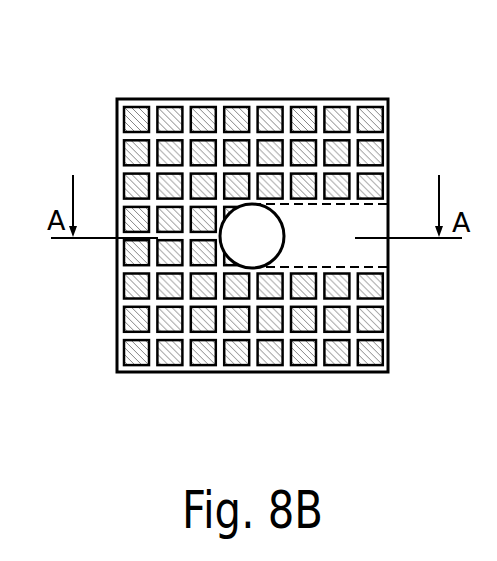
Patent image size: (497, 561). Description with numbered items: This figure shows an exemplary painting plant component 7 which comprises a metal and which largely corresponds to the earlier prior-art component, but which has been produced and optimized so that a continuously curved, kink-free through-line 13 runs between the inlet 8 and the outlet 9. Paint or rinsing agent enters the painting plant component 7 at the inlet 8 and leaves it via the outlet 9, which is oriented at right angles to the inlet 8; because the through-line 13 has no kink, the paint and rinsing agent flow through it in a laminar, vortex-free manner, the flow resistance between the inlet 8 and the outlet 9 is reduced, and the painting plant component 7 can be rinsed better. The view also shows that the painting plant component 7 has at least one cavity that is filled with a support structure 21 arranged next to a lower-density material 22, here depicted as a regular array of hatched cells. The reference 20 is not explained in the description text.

The pixel array device 20 is at (265, 98).
The painting plant component 7 is at (212, 99).
The outlet 9 is at (240, 226).
The inlet 8 is at (388, 247).
The through-line 13 is at (340, 253).
The lower-density material 22 is at (158, 246).
The support structure 21 is at (133, 335).